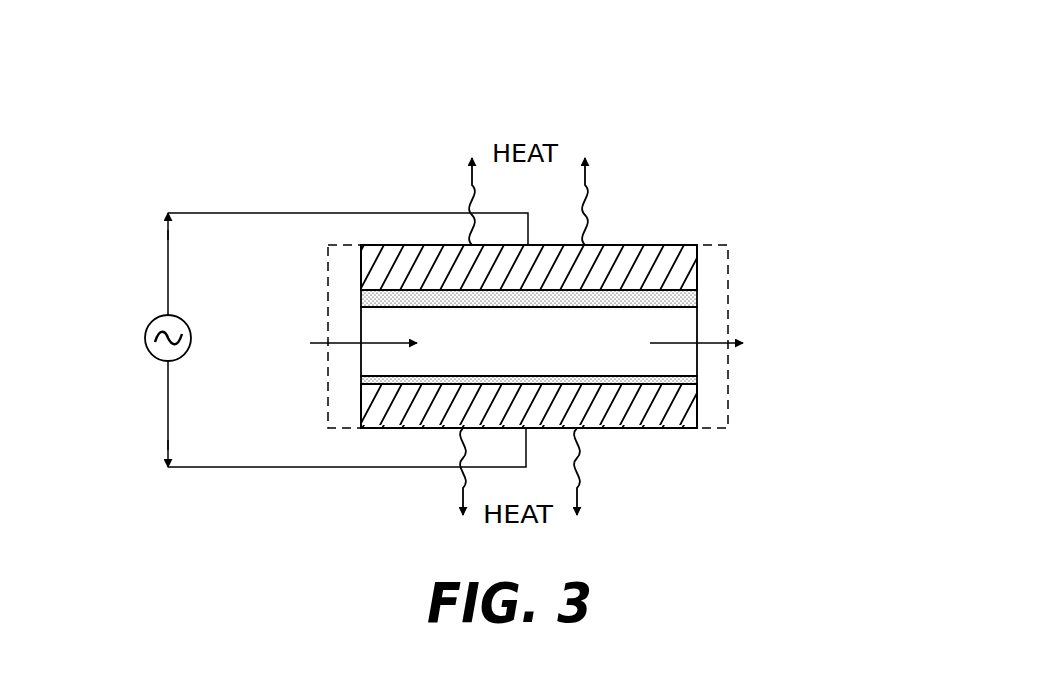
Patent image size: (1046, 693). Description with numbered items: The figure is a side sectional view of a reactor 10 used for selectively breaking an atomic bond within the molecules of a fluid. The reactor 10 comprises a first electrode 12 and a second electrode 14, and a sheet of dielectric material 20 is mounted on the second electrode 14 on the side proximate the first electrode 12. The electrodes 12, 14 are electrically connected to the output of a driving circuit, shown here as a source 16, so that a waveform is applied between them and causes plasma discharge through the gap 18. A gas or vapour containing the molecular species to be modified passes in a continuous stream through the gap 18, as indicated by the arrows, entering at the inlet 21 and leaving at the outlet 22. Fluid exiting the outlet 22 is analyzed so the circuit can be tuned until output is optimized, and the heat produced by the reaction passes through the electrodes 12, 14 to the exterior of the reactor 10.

The reactor 10 is at (659, 71).
The first electrode 12 is at (698, 402).
The second electrode 14 is at (678, 265).
The AC power source 16 is at (146, 336).
The gap 18 is at (683, 359).
The sheet of dielectric material 20 is at (683, 296).
The inlet 21 is at (326, 343).
The outlet 22 is at (718, 338).